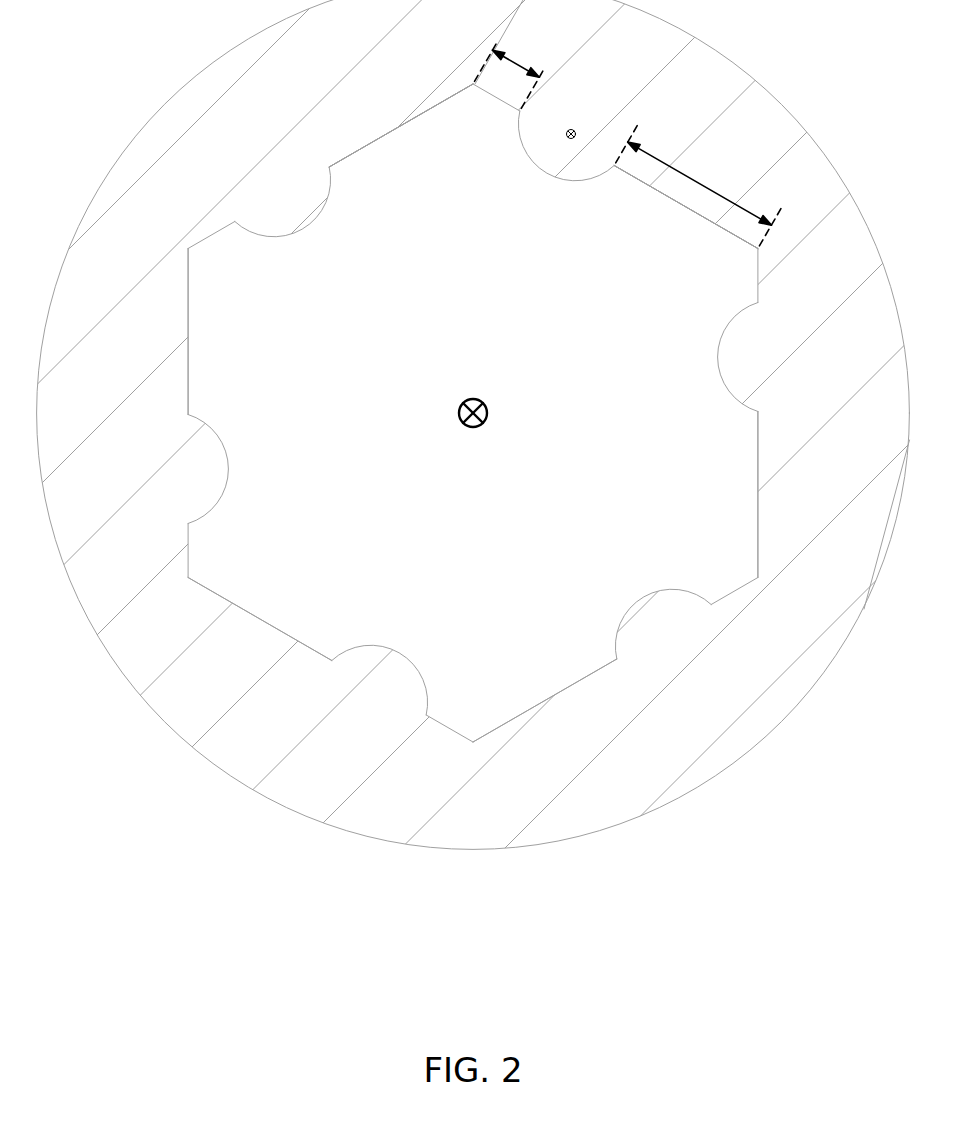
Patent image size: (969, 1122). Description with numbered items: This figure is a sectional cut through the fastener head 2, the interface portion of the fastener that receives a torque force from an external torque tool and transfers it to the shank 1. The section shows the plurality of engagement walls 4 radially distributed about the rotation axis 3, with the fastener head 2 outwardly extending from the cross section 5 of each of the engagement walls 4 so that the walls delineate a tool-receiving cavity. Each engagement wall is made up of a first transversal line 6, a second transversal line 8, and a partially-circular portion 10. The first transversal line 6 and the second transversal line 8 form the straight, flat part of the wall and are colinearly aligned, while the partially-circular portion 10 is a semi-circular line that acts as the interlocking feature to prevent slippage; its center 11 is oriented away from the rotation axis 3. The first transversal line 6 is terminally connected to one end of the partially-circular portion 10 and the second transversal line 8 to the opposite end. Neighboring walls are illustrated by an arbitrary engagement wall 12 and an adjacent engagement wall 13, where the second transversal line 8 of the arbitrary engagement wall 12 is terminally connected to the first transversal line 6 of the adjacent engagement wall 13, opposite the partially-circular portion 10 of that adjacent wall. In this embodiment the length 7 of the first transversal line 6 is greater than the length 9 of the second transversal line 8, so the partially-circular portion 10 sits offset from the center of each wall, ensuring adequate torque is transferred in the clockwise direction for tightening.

The shank 1 is at (481, 377).
The fastener head 2 is at (466, 42).
The rotation axis 3 is at (460, 407).
The plurality of engagement walls 4 is at (262, 400).
The cross section 5 is at (398, 128).
The first transversal line 6 is at (375, 144).
The length of the first transversal line 7 is at (703, 181).
The second transversal line 8 is at (509, 108).
The length of the second transversal line 9 is at (518, 66).
The partially-circular portion 10 is at (555, 174).
The center of the partially-circular portion 11 is at (572, 131).
The arbitrary engagement wall 12 is at (576, 220).
The adjacent engagement wall 13 is at (370, 223).